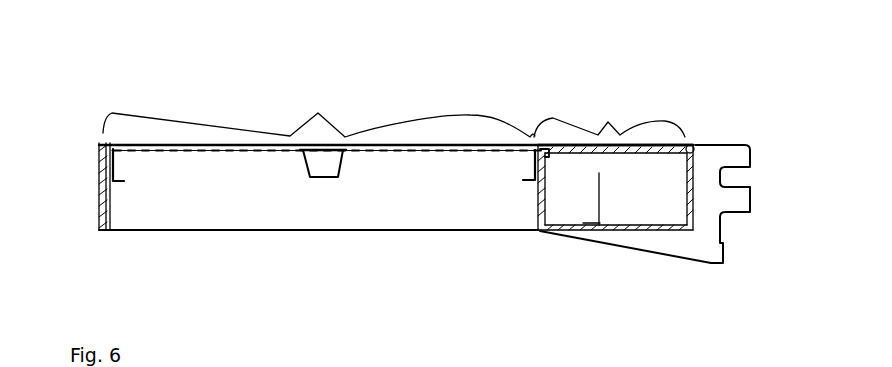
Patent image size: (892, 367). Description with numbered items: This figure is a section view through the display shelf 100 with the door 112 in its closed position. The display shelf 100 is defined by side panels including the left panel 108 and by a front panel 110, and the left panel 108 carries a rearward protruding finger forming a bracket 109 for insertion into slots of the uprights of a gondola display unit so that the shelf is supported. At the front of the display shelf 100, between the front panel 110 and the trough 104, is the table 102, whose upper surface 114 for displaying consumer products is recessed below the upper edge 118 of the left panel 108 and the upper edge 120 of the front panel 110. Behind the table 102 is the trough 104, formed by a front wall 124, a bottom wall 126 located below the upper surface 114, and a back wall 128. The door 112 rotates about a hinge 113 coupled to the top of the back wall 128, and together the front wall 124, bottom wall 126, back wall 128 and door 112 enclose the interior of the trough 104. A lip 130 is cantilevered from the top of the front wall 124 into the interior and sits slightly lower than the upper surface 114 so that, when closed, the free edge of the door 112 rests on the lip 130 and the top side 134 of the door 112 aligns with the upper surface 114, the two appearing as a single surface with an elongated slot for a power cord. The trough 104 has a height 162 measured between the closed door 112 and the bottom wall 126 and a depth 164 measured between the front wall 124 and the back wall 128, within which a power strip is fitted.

The display shelf 100 is at (640, 37).
The table 102 is at (319, 109).
The trough 104 is at (609, 112).
The left panel 108 is at (378, 215).
The bracket 109 is at (755, 160).
The front panel 110 is at (98, 205).
The door 112 is at (627, 143).
The hinge 113 is at (700, 145).
The upper surface 114 is at (365, 147).
The upper edge 118 is at (428, 147).
The upper edge 120 is at (100, 143).
The front wall 124 is at (537, 207).
The bottom wall 126 is at (615, 232).
The back wall 128 is at (697, 215).
The lip 130 is at (541, 145).
The top side 134 is at (637, 145).
The height 162 is at (658, 153).
The depth 164 is at (547, 163).